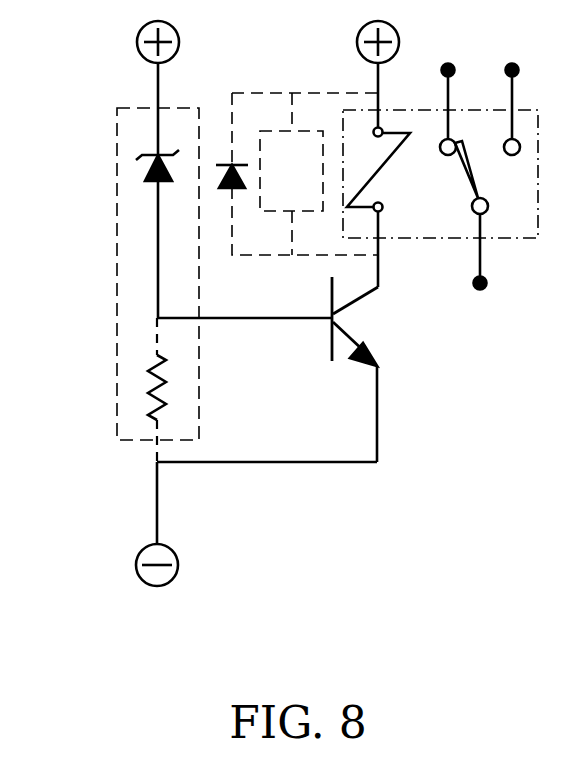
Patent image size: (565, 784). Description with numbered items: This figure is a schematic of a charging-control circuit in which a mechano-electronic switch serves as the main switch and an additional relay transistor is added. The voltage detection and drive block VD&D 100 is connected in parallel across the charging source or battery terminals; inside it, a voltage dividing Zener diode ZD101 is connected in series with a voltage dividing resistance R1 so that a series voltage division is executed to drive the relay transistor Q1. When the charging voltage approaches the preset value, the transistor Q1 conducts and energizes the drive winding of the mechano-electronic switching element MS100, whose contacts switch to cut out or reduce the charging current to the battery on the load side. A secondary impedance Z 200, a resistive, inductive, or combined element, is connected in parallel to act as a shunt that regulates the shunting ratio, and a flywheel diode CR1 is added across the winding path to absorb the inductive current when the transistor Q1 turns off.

The voltage detection & drive 100 is at (115, 276).
The voltage dividing Zener diode ZD101 is at (155, 155).
The flywheel diode CR1 is at (233, 163).
The voltage dividing resistance R1 is at (148, 380).
The secondary impedance 200 is at (305, 174).
The mechano-electronic switching element MS100 is at (440, 238).
The relay transistor Q1 is at (355, 345).